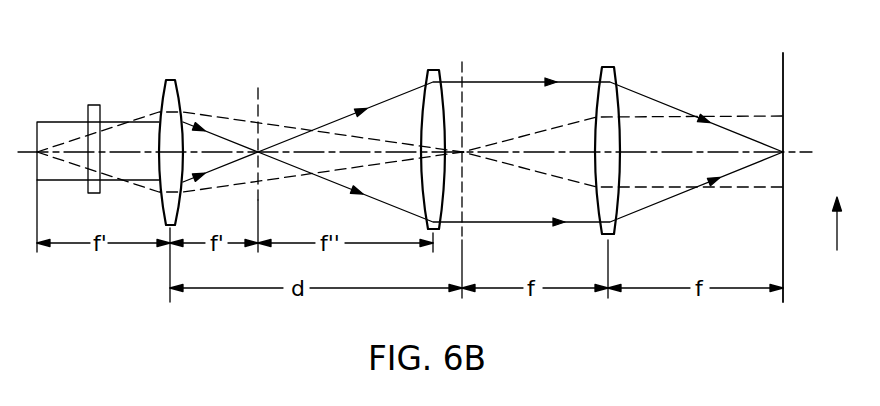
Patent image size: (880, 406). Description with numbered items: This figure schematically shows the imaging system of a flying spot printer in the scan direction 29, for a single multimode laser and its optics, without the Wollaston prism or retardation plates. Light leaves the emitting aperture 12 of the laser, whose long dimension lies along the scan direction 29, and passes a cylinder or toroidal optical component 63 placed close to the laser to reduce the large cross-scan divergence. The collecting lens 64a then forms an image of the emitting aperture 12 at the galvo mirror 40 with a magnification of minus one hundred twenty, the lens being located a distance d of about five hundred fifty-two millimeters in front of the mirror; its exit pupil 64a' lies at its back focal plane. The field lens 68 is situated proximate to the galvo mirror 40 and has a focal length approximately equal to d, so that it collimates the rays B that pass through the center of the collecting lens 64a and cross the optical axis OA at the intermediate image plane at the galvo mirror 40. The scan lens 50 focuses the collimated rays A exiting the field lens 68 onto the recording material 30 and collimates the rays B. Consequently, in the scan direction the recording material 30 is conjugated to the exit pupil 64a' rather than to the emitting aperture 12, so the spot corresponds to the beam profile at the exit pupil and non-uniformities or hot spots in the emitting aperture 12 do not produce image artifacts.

The emitting aperture 12 is at (37, 122).
The rays B is at (70, 140).
The toroidal optical component 63 is at (100, 105).
The collecting lens 64a is at (198, 126).
The exit pupil of collecting lens 64a' is at (292, 152).
The field lens 68 is at (433, 70).
The galvo mirror 40 is at (465, 68).
The collimated rays A is at (520, 82).
The scan lens 50 is at (618, 72).
The recording material 30 is at (785, 82).
The optical axis OA is at (797, 150).
The scan direction 29 is at (837, 250).